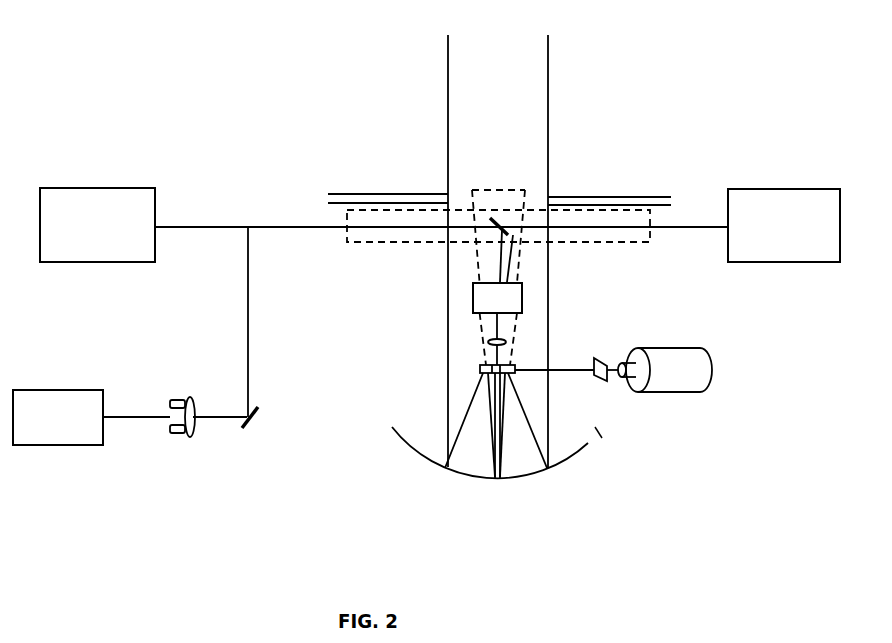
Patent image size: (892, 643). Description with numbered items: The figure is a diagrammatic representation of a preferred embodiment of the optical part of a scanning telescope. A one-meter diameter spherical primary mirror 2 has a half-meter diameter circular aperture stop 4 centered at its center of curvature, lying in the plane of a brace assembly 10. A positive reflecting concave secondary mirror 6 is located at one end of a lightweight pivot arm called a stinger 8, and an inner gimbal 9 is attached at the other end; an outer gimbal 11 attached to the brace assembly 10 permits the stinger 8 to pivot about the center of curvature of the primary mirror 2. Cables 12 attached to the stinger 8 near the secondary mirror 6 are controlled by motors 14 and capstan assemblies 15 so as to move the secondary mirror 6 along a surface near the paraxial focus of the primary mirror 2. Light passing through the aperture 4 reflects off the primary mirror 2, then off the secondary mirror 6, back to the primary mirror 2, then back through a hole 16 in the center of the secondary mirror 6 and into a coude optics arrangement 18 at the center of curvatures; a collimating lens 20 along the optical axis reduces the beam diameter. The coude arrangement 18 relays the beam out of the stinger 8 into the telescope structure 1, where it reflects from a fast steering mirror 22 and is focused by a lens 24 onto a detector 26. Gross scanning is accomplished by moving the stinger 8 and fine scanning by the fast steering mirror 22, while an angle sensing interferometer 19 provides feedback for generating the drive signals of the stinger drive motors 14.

The telescope structure 1 is at (667, 83).
The primary mirror 2 is at (563, 461).
The aperture stop 4 is at (448, 191).
The secondary mirror 6 is at (515, 366).
The stinger 8 is at (518, 267).
The inner gimbal 9 is at (473, 297).
The brace assembly 10 is at (568, 210).
The outer gimbal 11 is at (785, 189).
The cables 12 is at (577, 377).
The motors 14 is at (700, 388).
The capstan assemblies 15 is at (602, 380).
The hole 16 is at (490, 376).
The coude optics arrangement 18 is at (523, 213).
The angle sensing interferometer 19 is at (93, 188).
The collimating lens 20 is at (508, 340).
The fast steering mirror 22 is at (252, 425).
The lens 24 is at (197, 418).
The detector 26 is at (55, 445).